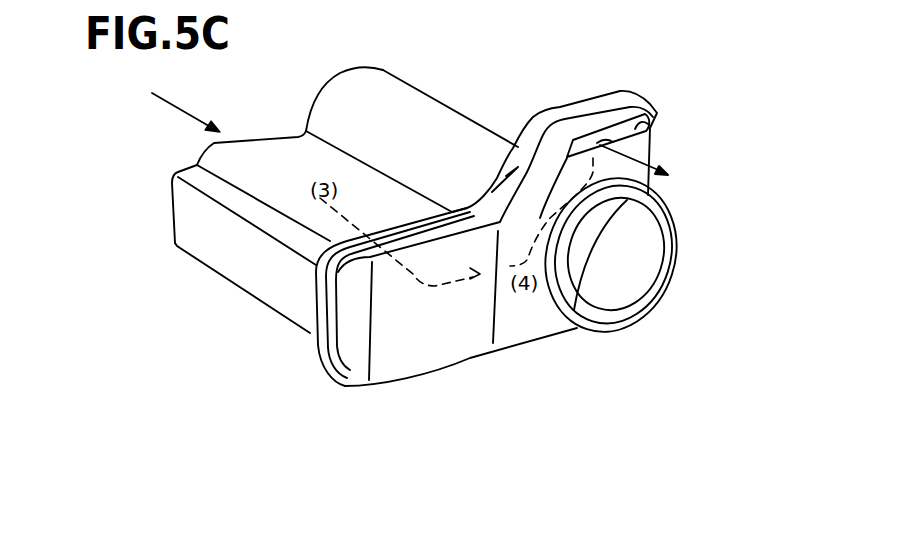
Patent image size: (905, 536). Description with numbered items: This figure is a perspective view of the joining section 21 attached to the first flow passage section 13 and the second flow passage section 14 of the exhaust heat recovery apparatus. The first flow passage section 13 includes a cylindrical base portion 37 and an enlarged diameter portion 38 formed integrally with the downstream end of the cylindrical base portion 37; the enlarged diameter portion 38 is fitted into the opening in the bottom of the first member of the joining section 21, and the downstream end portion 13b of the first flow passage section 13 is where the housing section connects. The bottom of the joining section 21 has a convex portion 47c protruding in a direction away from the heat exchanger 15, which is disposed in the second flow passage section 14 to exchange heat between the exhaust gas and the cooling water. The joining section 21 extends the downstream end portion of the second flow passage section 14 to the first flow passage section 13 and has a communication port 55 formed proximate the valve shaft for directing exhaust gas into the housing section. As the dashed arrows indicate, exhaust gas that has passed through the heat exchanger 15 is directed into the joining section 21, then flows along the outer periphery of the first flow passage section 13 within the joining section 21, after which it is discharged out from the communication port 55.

The first flow passage section 13 is at (460, 107).
The downstream end portion 13b is at (597, 327).
The second flow passage section 14 is at (265, 332).
The heat exchanger 15 is at (212, 275).
The joining section 21 is at (643, 90).
The cylindrical base portion 37 is at (413, 82).
The enlarged diameter portion 38 is at (553, 292).
The convex portion 47c is at (457, 343).
The communication port 55 is at (657, 126).